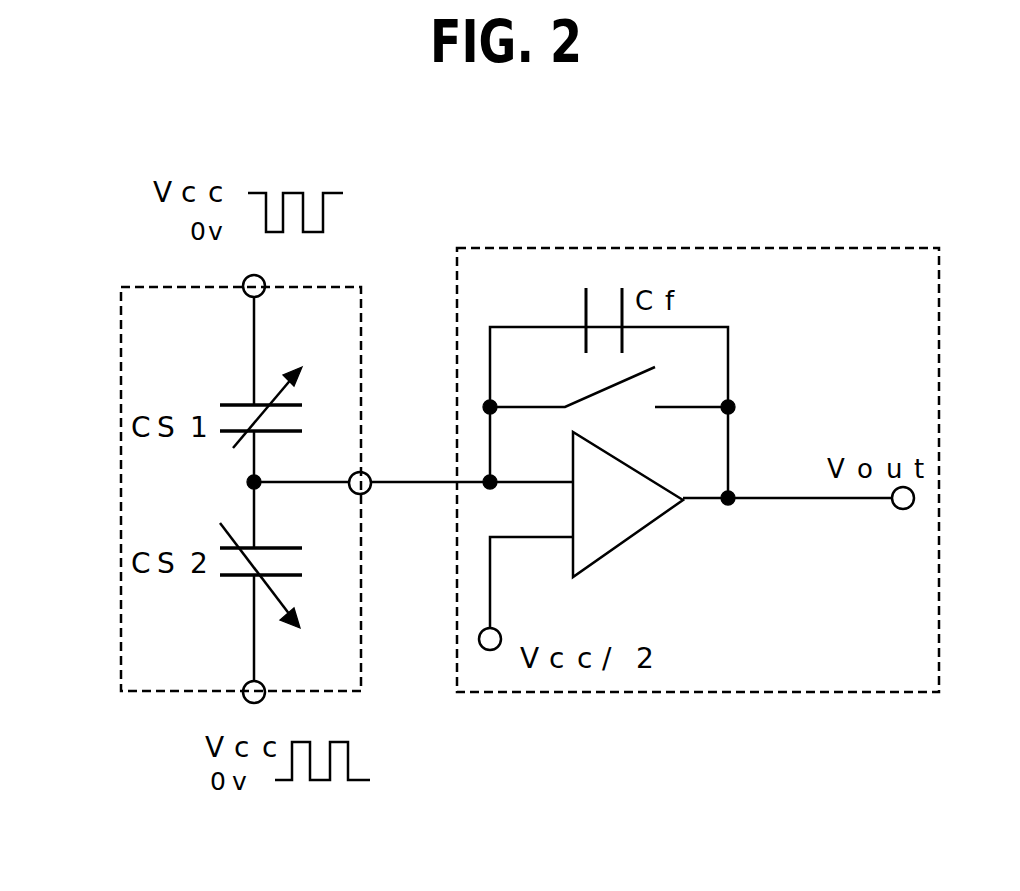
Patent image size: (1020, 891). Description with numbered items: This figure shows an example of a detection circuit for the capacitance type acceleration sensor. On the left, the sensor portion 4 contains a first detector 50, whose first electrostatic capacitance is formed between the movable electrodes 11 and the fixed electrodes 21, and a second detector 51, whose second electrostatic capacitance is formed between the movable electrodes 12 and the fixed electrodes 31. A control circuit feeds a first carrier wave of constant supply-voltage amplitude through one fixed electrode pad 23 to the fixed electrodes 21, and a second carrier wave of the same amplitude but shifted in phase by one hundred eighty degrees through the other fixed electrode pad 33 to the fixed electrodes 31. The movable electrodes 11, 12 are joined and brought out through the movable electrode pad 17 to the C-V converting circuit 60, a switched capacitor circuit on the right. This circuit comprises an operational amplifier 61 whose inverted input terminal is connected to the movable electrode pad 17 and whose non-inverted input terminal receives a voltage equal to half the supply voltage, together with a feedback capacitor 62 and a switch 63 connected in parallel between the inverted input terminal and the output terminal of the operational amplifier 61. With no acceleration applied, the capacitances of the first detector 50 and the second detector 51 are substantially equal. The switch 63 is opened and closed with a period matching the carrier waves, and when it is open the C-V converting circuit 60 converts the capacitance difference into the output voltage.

The sensor portion 4 is at (118, 306).
The fixed electrode pad 23 is at (265, 283).
The fixed electrodes 21 is at (247, 400).
The first detector 50 is at (235, 415).
The movable electrodes 11 is at (275, 437).
The movable electrodes 12 is at (272, 540).
The second detector 51 is at (232, 558).
The fixed electrodes 31 is at (232, 575).
The fixed electrode pad 33 is at (243, 685).
The movable electrode pad 17 is at (368, 490).
The C-V converting circuit 60 is at (808, 248).
The capacitor 62 is at (585, 302).
The switch 63 is at (610, 390).
The operational amplifier 61 is at (637, 537).